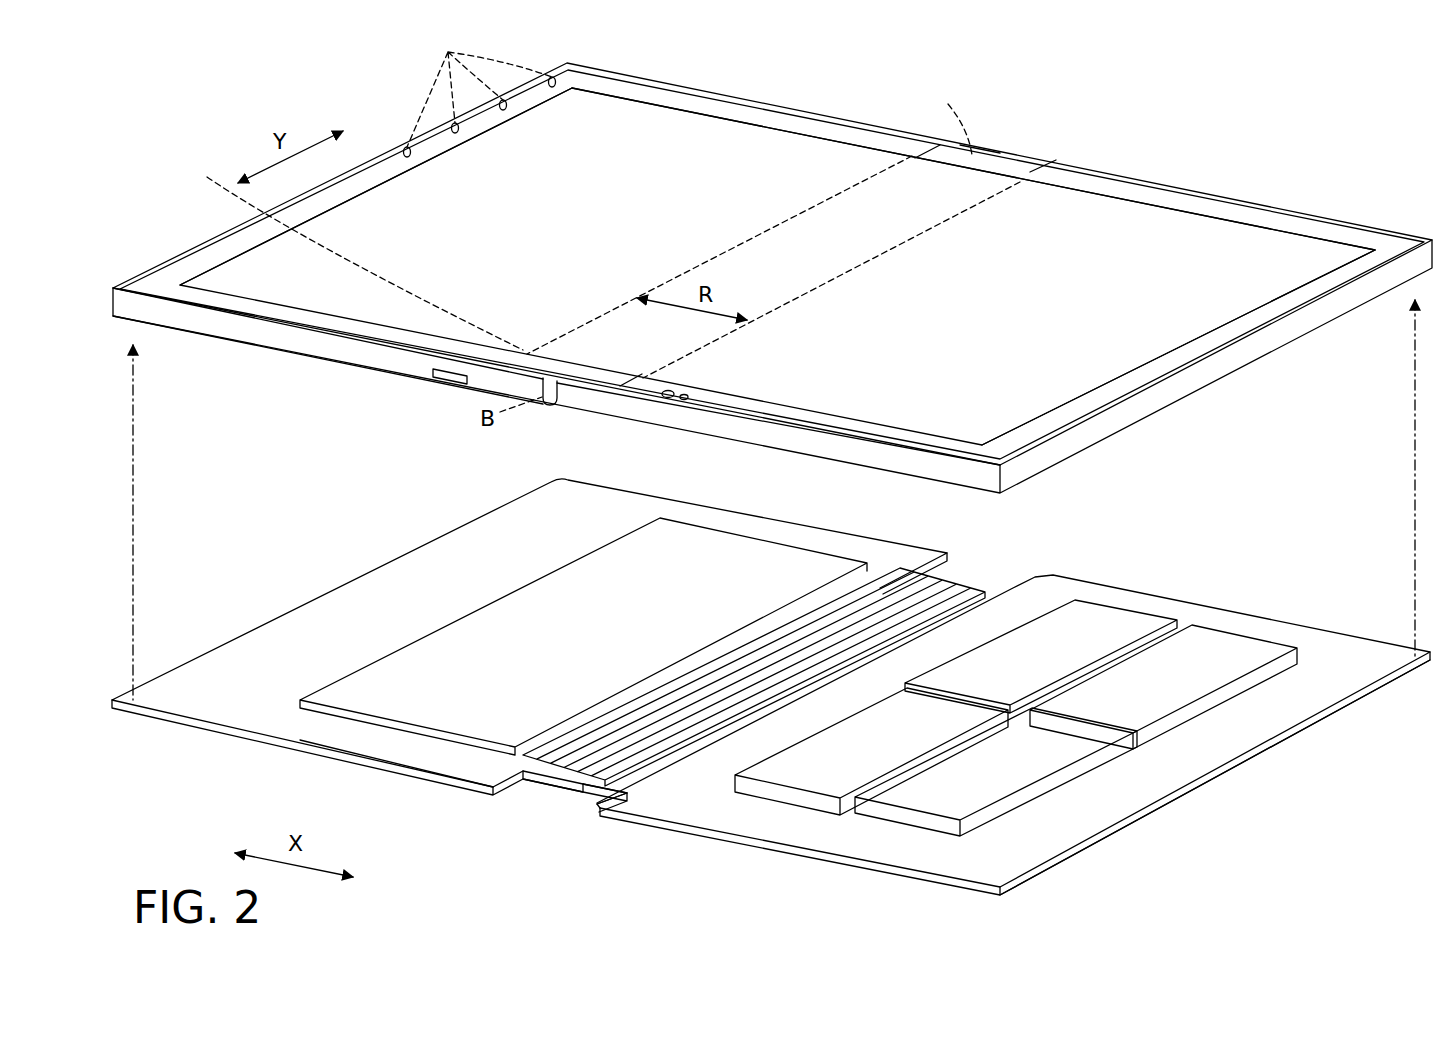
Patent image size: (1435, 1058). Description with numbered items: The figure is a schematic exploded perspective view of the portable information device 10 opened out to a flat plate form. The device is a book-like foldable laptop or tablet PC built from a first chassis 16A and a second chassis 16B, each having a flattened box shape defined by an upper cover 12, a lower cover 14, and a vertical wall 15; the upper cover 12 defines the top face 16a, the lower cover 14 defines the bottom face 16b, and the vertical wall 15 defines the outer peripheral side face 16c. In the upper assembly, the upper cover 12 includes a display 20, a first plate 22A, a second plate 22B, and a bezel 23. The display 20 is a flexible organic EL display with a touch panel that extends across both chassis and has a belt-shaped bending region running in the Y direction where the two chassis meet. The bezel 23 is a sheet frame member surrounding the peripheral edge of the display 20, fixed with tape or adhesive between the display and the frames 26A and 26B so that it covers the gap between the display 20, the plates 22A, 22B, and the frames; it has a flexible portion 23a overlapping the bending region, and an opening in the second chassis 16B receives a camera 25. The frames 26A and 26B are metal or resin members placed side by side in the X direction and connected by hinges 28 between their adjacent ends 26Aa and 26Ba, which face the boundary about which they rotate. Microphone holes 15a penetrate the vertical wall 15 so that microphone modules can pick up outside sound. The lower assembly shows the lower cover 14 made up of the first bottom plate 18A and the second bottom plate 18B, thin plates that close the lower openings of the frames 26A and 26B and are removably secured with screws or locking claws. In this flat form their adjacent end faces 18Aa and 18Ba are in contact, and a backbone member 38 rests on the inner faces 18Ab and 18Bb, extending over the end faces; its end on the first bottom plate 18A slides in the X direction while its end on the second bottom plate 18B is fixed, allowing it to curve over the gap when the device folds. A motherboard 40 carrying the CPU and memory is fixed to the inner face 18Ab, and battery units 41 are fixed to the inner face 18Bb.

The portable information device 10 is at (126, 93).
The upper cover 12 is at (777, 247).
The lower cover 14 is at (771, 687).
The vertical wall 15 is at (287, 340).
The microphone holes 15a is at (468, 49).
The first chassis 16A is at (798, 108).
The second chassis 16B is at (1298, 210).
The top face 16a is at (840, 168).
The bottom face 16b is at (223, 738).
The outer peripheral side face 16c is at (193, 322).
The first bottom plate 18A is at (529, 681).
The adjacent end face of first bottom plate 18Aa is at (588, 790).
The inner face of first bottom plate 18Ab is at (412, 756).
The second bottom plate 18B is at (956, 709).
The adjacent end face of second bottom plate 18Ba is at (573, 790).
The inner face of second bottom plate 18Bb is at (1020, 848).
The display 20 is at (1115, 227).
The first plate 22A is at (598, 122).
The second plate 22B is at (1188, 247).
The bezel 23 is at (724, 110).
The portion of bezel overlapping bending region 23a is at (580, 373).
The camera 25 is at (663, 393).
The first frame 26A is at (368, 372).
The adjacent end of first frame 26Aa is at (557, 397).
The second frame 26B is at (1100, 447).
The adjacent end of second frame 26Ba is at (997, 150).
The hinges 28 is at (582, 213).
The backbone member 38 is at (777, 657).
The motherboard 40 is at (513, 640).
The battery units 41 is at (1210, 658).